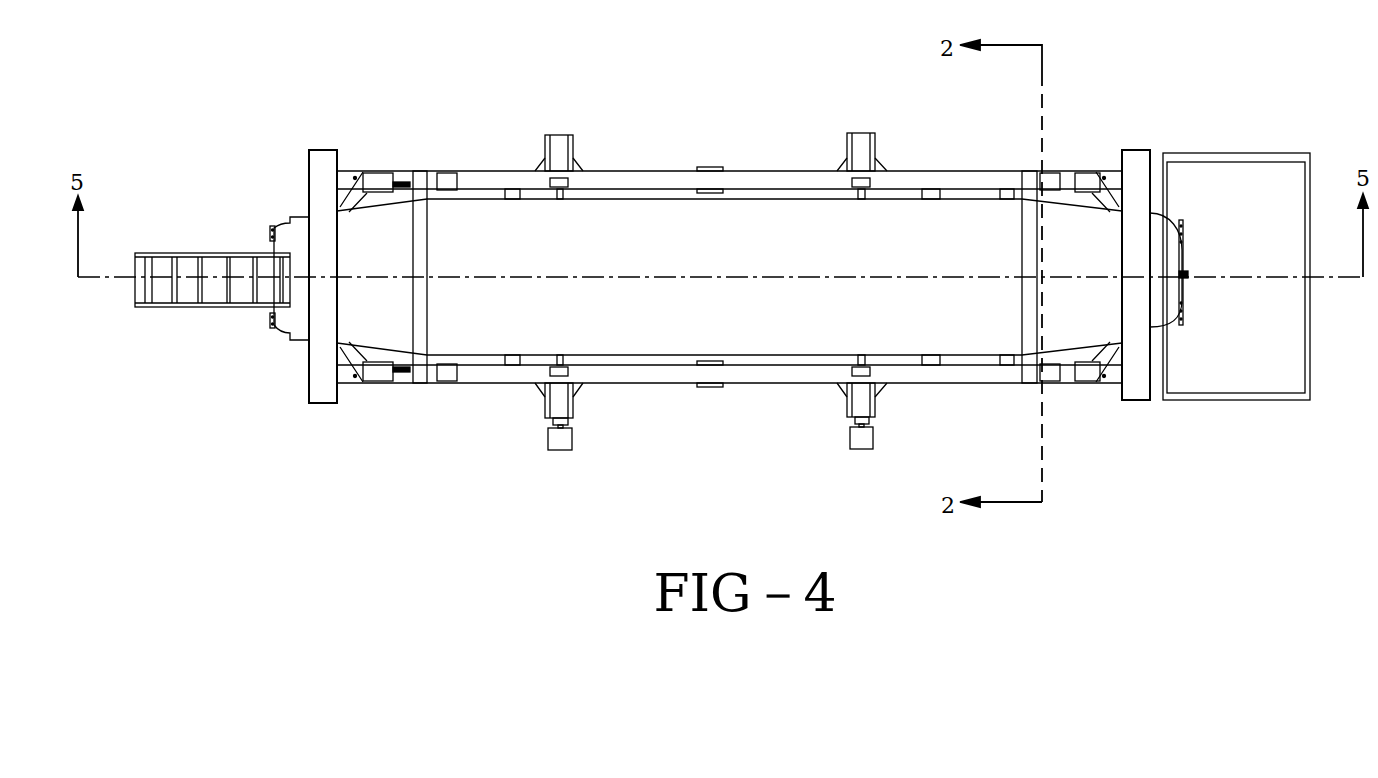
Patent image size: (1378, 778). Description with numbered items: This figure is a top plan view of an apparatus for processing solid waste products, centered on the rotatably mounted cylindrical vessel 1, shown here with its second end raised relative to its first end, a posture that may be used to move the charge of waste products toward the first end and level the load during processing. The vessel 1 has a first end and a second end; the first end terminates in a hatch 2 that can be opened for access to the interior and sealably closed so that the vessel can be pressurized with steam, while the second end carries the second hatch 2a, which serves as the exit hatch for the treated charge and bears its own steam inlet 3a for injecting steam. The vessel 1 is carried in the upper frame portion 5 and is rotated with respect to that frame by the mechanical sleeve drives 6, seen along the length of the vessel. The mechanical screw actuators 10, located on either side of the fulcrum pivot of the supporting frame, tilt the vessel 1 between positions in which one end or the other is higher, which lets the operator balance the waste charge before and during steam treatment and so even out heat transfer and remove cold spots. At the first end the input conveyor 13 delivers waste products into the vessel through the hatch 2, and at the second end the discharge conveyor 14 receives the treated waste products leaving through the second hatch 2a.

The rotatably mounted cylindrical vessel 1 is at (652, 197).
The hatch 2 is at (272, 228).
The second hatch 2a is at (1170, 327).
The steam inlet 3a is at (1188, 272).
The upper frame portion 5 is at (308, 165).
The mechanical sleeve drives 6 is at (424, 240).
The mechanical screw actuators 10 is at (573, 147).
The input conveyor 13 is at (188, 253).
The discharge conveyor 14 is at (1217, 153).